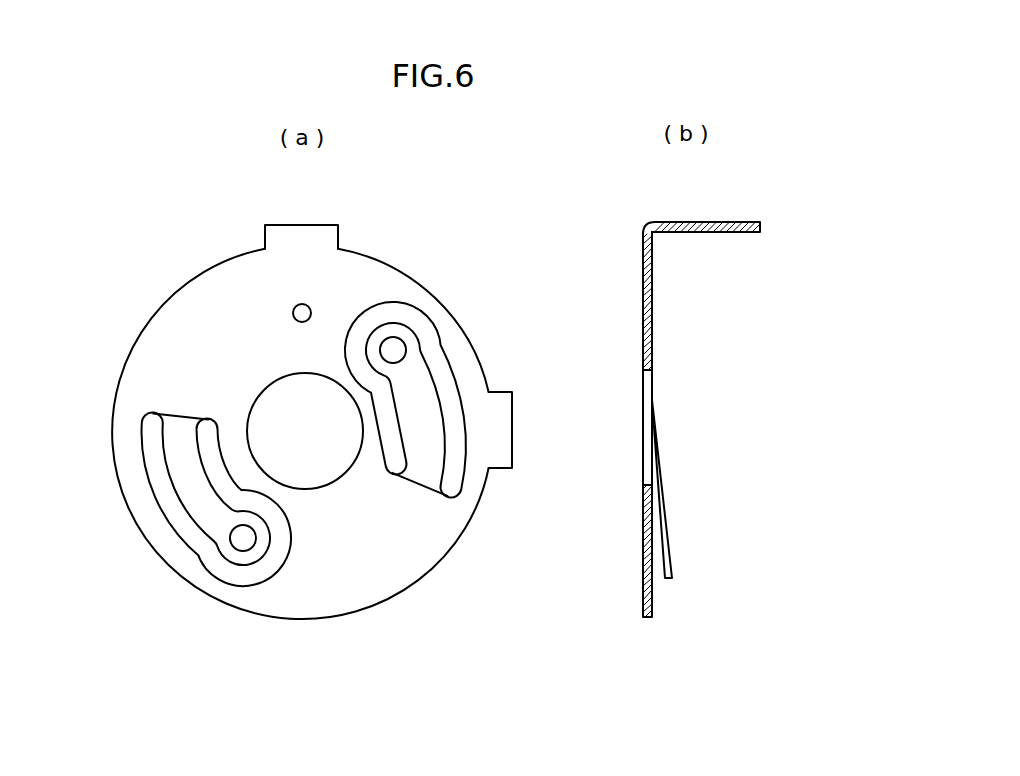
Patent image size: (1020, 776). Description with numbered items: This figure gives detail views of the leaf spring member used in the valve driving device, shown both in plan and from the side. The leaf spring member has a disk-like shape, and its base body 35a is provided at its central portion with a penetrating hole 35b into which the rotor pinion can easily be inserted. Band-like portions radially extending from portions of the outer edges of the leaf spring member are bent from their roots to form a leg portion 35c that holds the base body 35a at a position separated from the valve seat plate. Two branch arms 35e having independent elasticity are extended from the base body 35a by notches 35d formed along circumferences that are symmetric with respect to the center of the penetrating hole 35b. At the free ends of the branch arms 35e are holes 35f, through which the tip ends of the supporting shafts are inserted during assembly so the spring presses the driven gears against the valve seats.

The base body 35a is at (343, 560).
The penetrating hole 35b is at (283, 403).
The leg portion 35c is at (197, 273).
The notch 35d is at (432, 323).
The branch arm 35e is at (448, 393).
The hole 35f is at (391, 337).